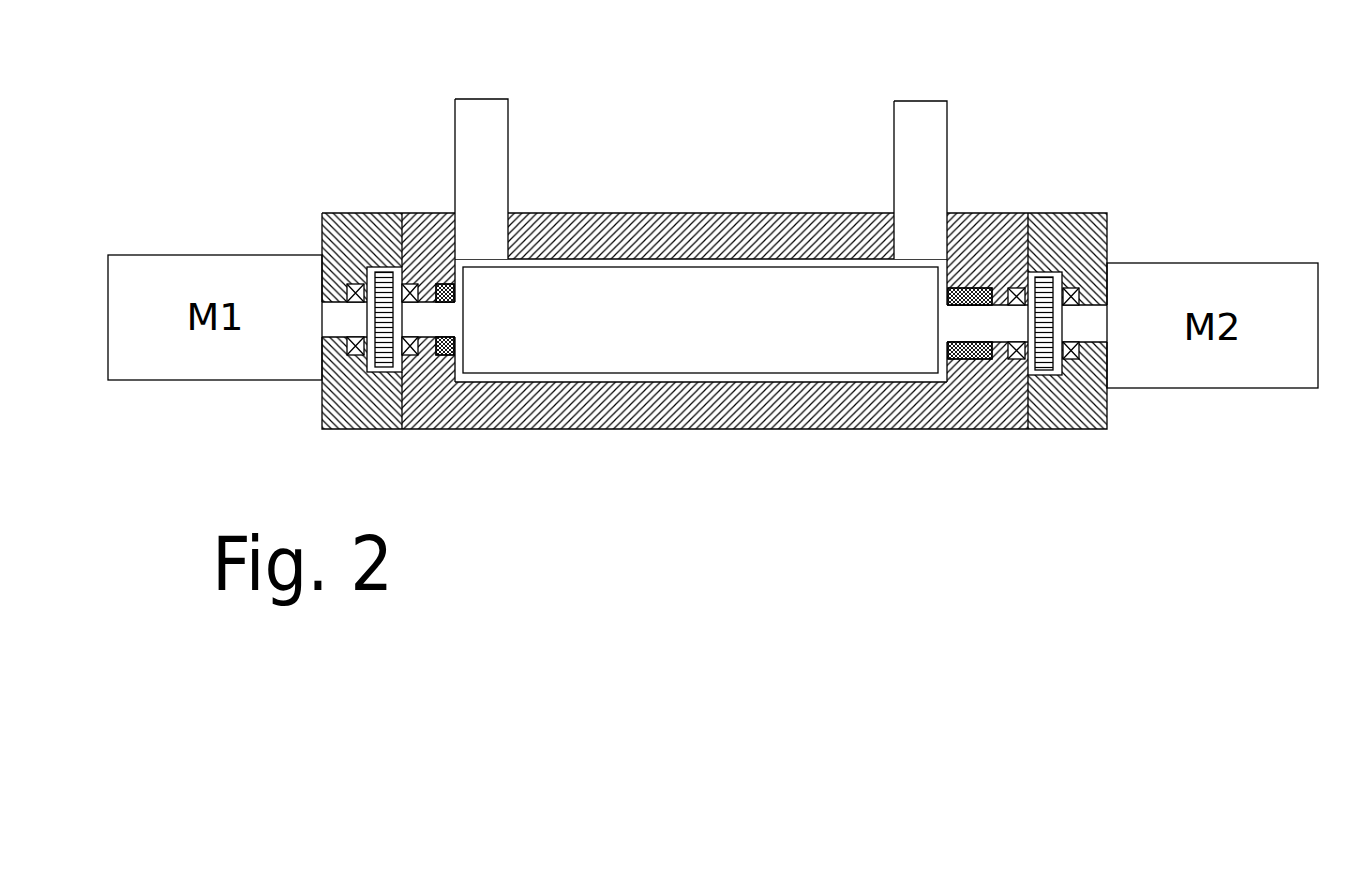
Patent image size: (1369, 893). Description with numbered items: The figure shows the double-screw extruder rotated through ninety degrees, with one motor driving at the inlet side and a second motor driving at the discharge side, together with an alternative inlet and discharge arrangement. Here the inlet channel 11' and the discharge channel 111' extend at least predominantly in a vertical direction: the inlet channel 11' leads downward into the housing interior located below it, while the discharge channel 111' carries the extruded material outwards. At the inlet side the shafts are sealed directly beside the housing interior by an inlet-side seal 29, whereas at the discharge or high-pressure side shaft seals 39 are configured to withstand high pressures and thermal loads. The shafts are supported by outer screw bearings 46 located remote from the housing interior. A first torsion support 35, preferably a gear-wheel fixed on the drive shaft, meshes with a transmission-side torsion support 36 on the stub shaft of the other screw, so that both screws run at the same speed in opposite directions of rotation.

The inlet channel 11' is at (490, 141).
The discharge channel 111' is at (889, 143).
The transmission-side torsion support 36 is at (384, 283).
The first torsion support 35 is at (1048, 353).
The outer screw bearings 46 is at (353, 285).
The inlet-side seal 29 is at (447, 350).
The shaft seals 39 is at (972, 288).